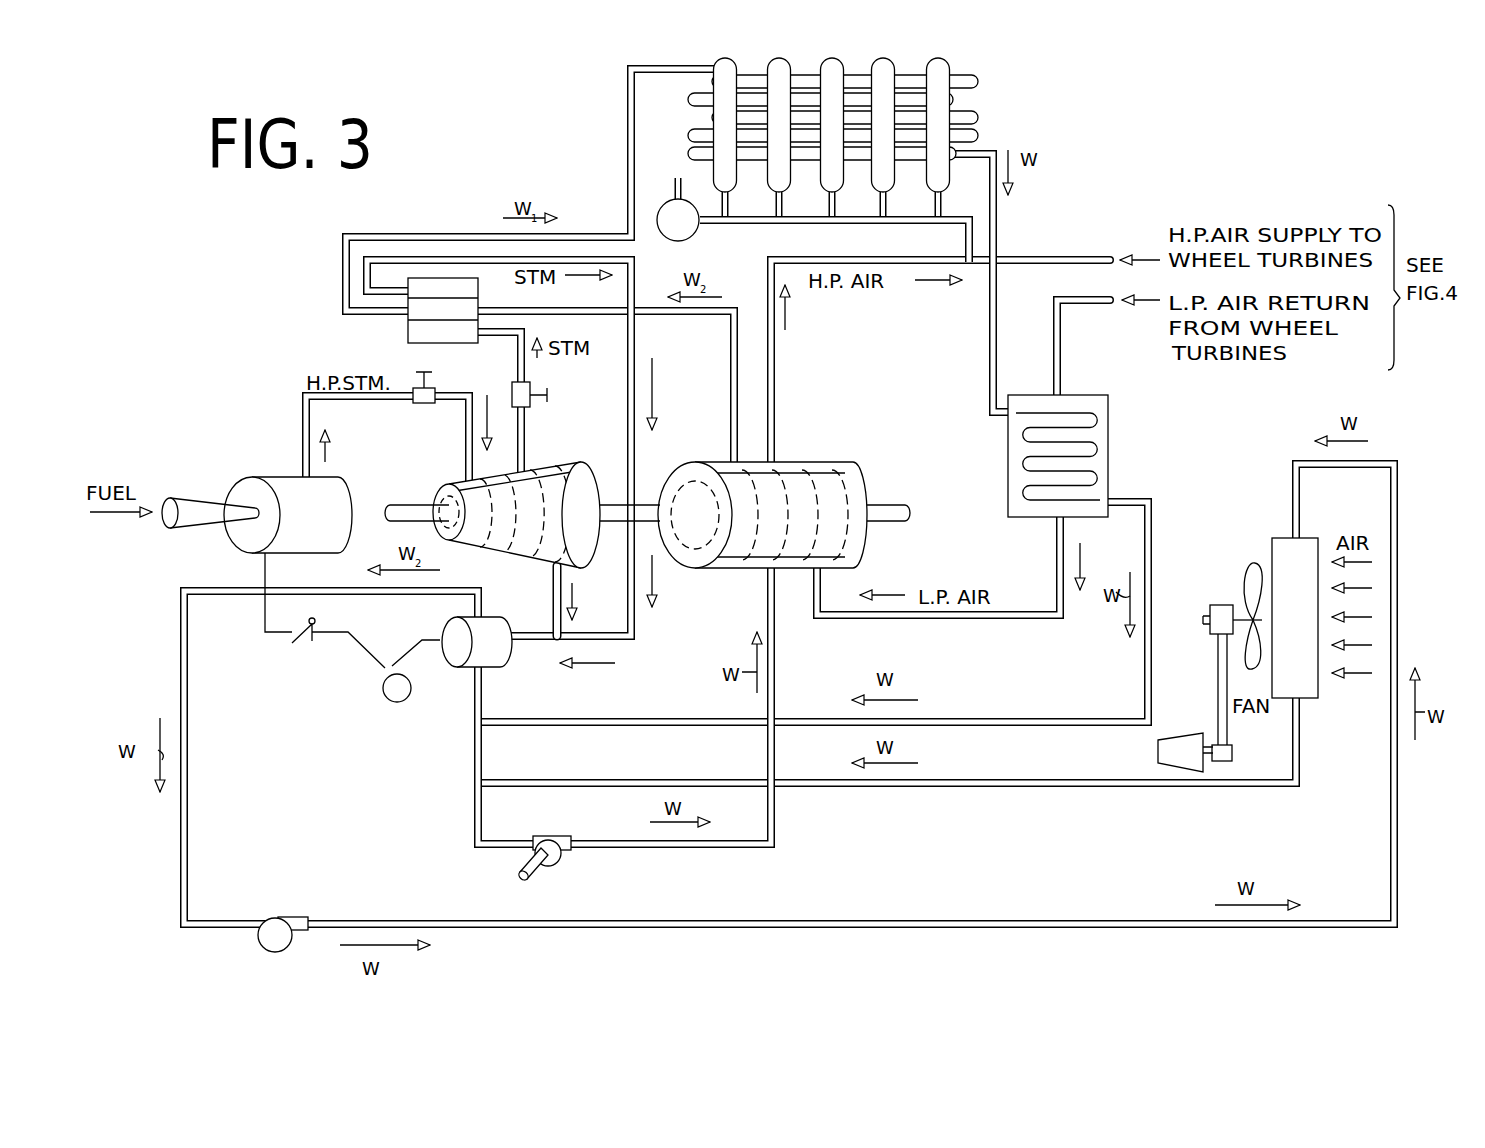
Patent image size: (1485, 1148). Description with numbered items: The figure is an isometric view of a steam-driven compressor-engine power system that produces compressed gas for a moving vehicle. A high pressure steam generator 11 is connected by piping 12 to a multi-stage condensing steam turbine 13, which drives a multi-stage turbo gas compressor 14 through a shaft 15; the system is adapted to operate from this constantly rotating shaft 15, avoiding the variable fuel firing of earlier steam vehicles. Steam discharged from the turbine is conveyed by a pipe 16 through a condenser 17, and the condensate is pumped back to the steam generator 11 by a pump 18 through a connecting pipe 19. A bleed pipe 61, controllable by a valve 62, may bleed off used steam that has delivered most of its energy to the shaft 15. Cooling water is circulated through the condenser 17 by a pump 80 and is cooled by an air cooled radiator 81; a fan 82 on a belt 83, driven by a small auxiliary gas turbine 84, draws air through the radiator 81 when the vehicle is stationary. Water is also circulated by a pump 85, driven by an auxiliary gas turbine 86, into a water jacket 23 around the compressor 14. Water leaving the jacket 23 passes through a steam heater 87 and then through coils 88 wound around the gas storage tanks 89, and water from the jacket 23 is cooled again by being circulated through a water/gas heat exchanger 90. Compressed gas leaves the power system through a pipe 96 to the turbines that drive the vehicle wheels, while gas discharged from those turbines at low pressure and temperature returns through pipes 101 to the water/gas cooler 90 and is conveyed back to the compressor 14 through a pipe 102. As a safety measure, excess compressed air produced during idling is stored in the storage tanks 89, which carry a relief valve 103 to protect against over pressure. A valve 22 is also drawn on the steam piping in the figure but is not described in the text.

The high pressure steam generator 11 is at (250, 478).
The piping 12 is at (302, 424).
The multi-stage condensing steam turbine 13 is at (600, 546).
The multi-stage turbo gas compressor 14 is at (762, 520).
The shaft 15 is at (412, 510).
The pipe 16 is at (553, 617).
The condenser 17 is at (488, 624).
The pump 18 is at (392, 699).
The connecting pipe 19 is at (263, 613).
The steam control valve 22 is at (424, 406).
The water jacket 23 is at (735, 573).
The bleed pipe 61 is at (527, 433).
The valve 62 is at (531, 392).
The pump 80 is at (276, 930).
The air cooled radiator 81 is at (1304, 697).
The fan 82 is at (1256, 582).
The belt 83 is at (1218, 682).
The small auxiliary gas turbine 84 is at (1160, 751).
The pump 85 is at (562, 838).
The auxiliary gas turbine 86 is at (520, 870).
The steam heater 87 is at (410, 332).
The coils 88 is at (980, 112).
The gas storage tanks 89 is at (982, 84).
The water/gas heat exchanger 90 is at (1016, 450).
The pipe 96 is at (757, 219).
The pipes 101 is at (1074, 306).
The pipe 102 is at (1024, 617).
The relief valve 103 is at (657, 214).